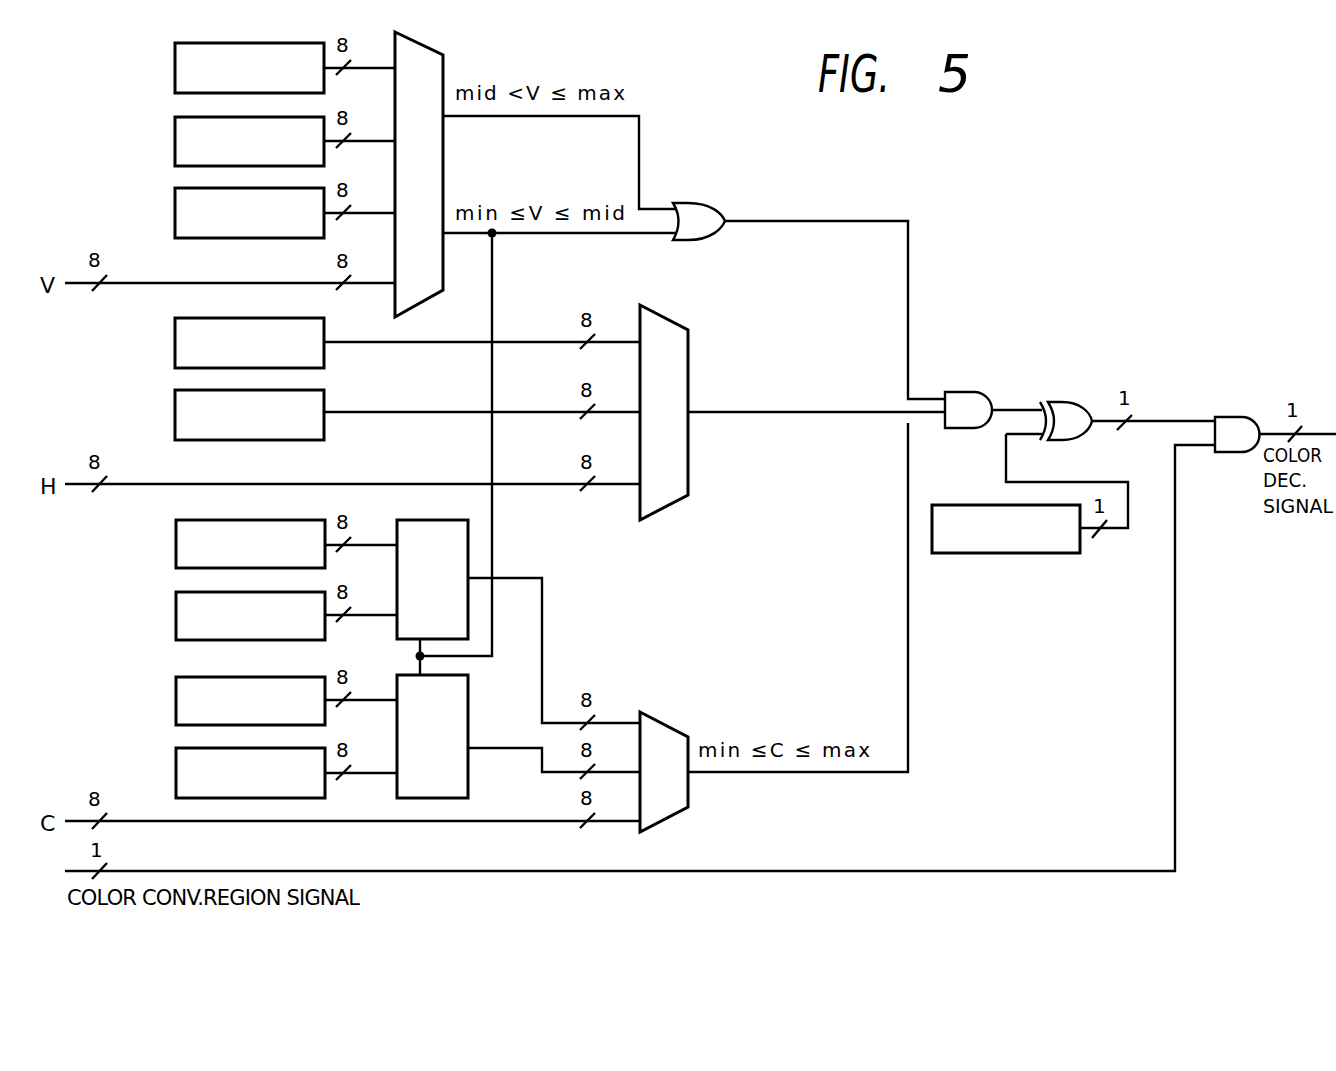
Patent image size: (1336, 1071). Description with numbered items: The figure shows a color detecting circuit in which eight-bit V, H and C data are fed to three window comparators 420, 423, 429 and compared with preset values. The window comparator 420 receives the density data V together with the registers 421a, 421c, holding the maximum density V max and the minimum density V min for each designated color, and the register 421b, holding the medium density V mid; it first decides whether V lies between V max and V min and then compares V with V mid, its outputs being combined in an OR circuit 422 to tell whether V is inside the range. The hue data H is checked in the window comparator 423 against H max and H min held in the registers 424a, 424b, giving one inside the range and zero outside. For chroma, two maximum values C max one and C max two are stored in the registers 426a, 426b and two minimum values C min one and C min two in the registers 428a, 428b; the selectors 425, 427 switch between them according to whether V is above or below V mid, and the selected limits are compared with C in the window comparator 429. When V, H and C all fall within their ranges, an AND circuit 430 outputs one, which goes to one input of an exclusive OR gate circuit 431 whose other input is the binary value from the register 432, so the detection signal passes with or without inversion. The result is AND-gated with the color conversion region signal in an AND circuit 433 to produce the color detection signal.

The window comparator 420 is at (443, 52).
The register 421a is at (175, 57).
The register 421b is at (175, 131).
The register 421c is at (175, 202).
The OR circuit 422 is at (700, 204).
The window comparator 423 is at (668, 319).
The register 424a is at (175, 332).
The register 424b is at (175, 404).
The selector 425 is at (469, 540).
The register 426a is at (176, 534).
The register 426b is at (176, 606).
The selector 427 is at (469, 697).
The register 428a is at (176, 691).
The register 428b is at (176, 763).
The window comparator 429 is at (672, 724).
The AND circuit 430 is at (970, 392).
The exclusive OR gate circuit 431 is at (1077, 402).
The register 432 is at (982, 555).
The AND circuit 433 is at (1220, 416).